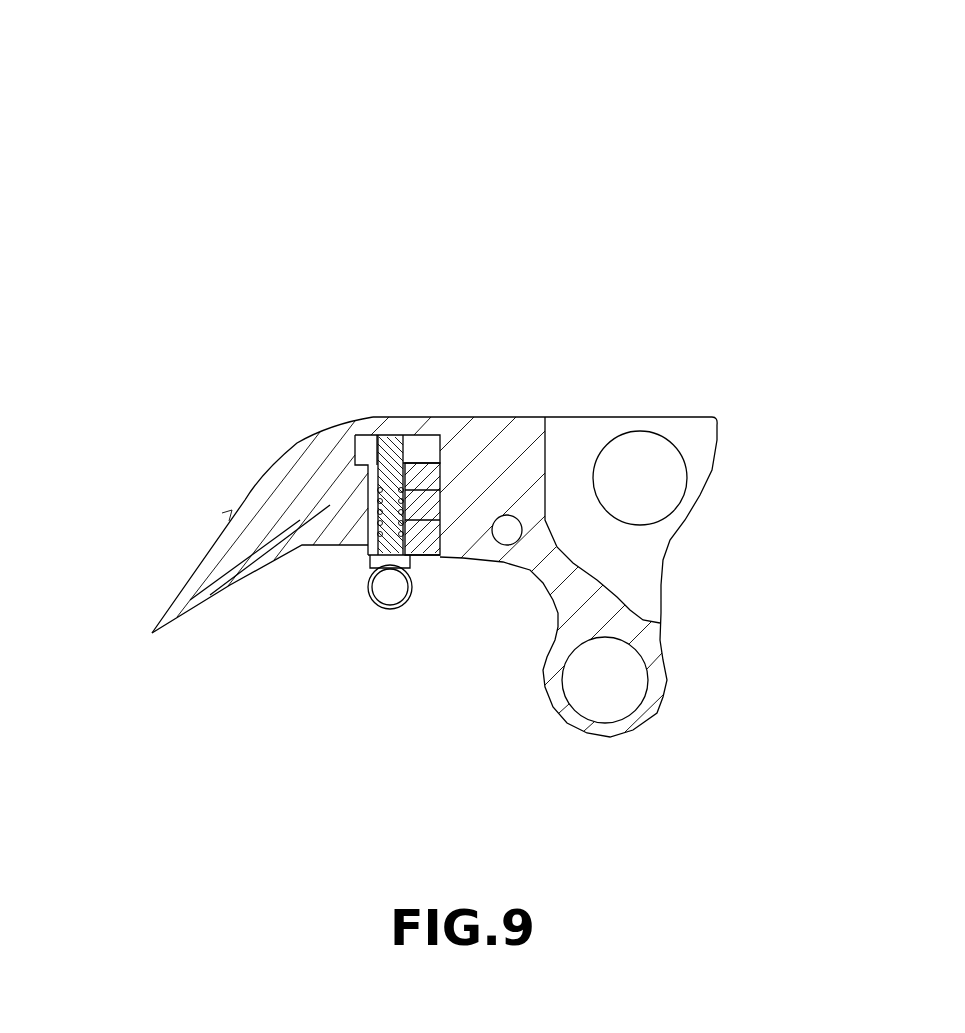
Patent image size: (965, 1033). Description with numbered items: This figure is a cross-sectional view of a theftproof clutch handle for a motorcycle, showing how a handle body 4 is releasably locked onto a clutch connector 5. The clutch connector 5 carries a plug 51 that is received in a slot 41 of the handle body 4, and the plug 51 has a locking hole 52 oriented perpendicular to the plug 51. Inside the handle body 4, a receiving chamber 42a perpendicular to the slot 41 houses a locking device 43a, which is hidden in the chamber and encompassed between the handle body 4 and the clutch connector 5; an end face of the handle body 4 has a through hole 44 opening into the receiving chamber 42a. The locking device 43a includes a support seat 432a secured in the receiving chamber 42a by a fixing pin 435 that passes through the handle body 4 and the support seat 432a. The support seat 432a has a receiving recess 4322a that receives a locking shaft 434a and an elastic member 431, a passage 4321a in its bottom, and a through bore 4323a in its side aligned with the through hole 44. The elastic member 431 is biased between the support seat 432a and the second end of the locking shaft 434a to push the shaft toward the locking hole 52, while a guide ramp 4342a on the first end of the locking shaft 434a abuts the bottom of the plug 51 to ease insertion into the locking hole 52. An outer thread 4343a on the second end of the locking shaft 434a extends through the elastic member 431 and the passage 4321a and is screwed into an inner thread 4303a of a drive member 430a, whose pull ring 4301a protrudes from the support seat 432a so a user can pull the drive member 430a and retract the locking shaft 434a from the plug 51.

The handle body 4 is at (356, 495).
The slot 41 is at (356, 456).
The receiving chamber 42a is at (354, 521).
The elastic member 431 is at (375, 553).
The passage 4321a is at (387, 570).
The clutch connector 5 is at (587, 430).
The plug 51 is at (353, 451).
The locking hole 52 is at (372, 437).
The locking shaft 434a is at (398, 440).
The guide ramp 4342a is at (400, 440).
The outer thread 4343a is at (393, 560).
The through hole 44 is at (445, 498).
The support seat 432a is at (435, 468).
The receiving recess 4322a is at (414, 497).
The through bore 4323a is at (434, 551).
The fixing pin 435 is at (416, 521).
The locking device 43a is at (414, 574).
The drive member 430a is at (398, 580).
The pull ring 4301a is at (382, 580).
The inner thread 4303a is at (377, 560).